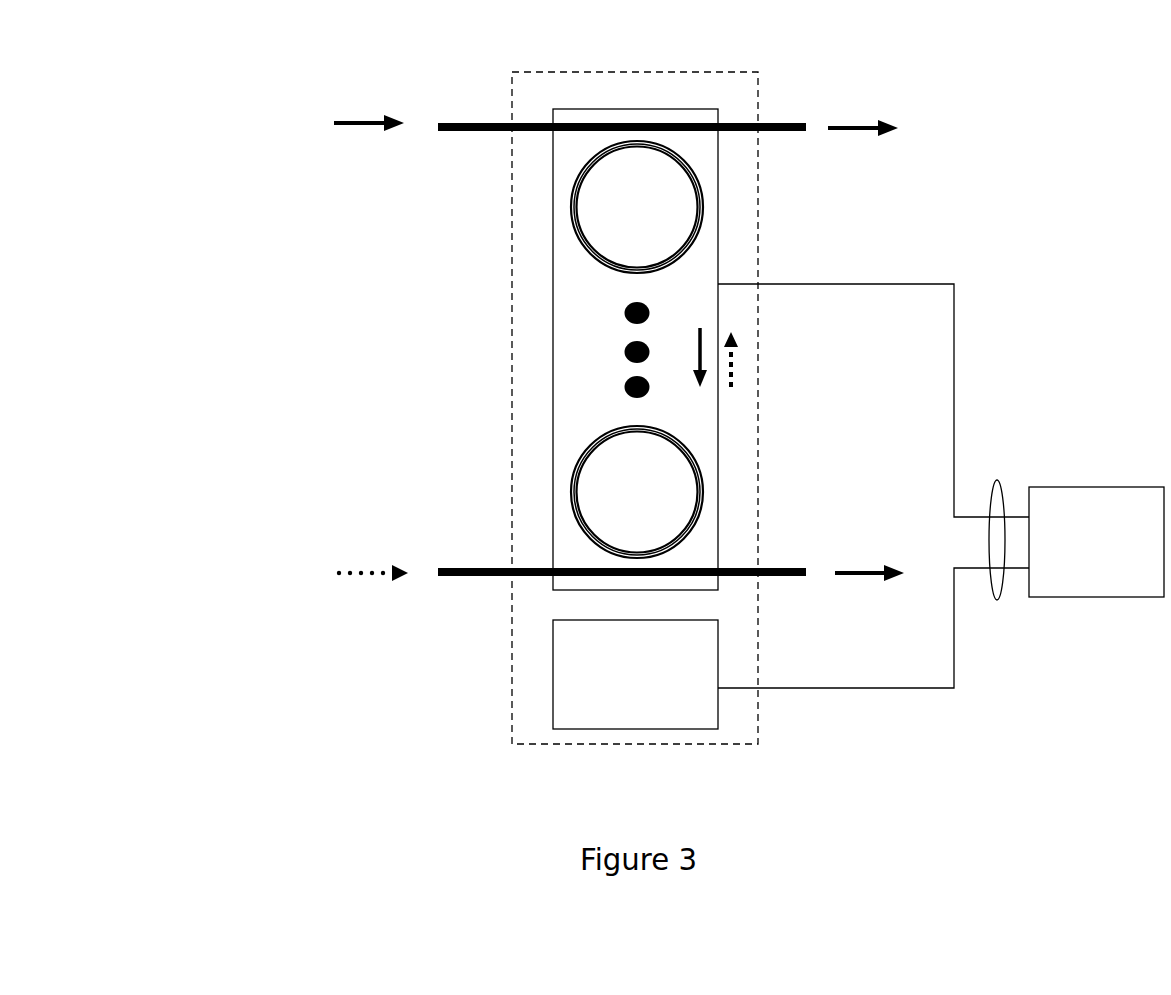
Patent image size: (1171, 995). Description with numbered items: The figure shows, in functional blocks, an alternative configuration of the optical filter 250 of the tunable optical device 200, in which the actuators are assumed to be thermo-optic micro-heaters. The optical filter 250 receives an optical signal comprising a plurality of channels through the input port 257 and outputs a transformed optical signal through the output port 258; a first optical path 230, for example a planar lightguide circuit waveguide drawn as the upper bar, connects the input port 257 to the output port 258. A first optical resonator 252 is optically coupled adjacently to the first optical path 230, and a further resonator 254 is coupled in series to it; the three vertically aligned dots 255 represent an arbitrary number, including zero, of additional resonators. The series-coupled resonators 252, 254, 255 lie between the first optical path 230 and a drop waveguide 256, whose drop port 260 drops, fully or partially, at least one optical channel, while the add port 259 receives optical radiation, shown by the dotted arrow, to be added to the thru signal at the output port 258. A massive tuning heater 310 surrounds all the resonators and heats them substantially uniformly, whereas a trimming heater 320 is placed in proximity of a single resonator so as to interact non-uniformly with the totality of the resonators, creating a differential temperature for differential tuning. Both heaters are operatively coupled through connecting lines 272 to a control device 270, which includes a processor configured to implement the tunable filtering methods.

The optical device 200 is at (266, 330).
The first optical path 230 is at (623, 122).
The optical filter 250 is at (508, 699).
The first optical resonator 252 is at (592, 257).
The further resonator 254 is at (580, 458).
The further resonators 255 is at (608, 345).
The drop waveguide 256 is at (535, 565).
The input port 257 is at (502, 130).
The output port 258 is at (760, 133).
The further input optical port 259 is at (503, 575).
The further output optical port 260 is at (762, 577).
The control device 270 is at (1097, 487).
The connecting lines 272 is at (997, 600).
The massive tuning heater 310 is at (717, 490).
The trimming heater 320 is at (678, 730).